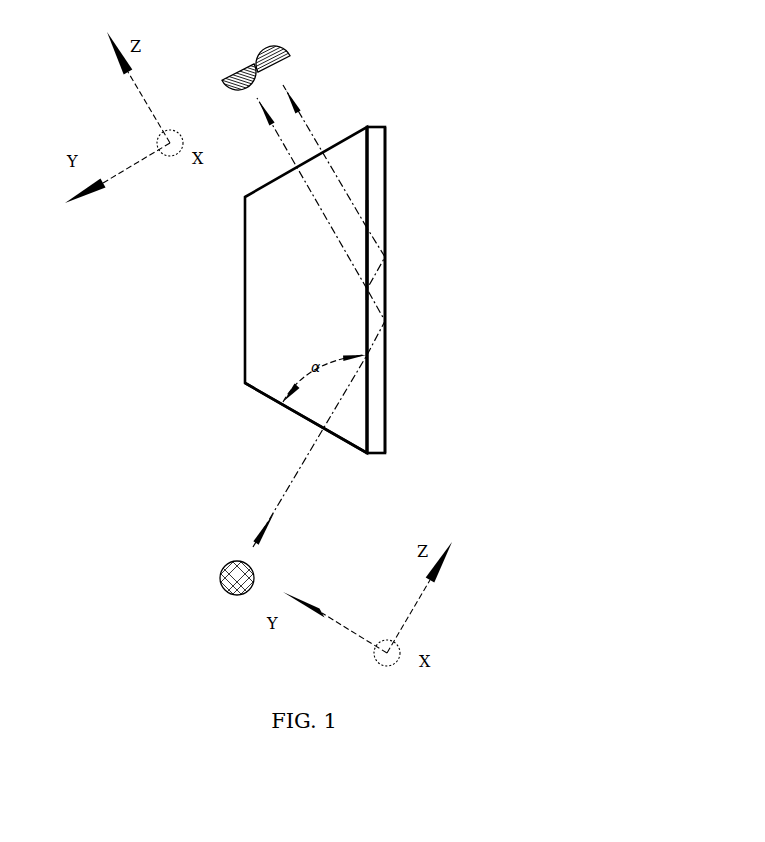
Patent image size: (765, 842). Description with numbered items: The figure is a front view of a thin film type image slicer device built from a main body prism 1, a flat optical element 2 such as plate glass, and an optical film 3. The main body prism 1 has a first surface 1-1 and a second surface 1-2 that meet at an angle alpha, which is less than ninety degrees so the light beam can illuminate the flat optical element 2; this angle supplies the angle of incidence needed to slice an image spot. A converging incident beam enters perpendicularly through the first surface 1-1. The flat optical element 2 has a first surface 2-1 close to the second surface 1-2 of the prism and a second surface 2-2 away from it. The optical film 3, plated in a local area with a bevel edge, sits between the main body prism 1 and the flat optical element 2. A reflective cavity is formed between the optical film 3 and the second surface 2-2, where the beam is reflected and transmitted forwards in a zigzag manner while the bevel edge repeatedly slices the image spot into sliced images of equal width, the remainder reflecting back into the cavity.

The main body prism 1 is at (203, 332).
The first surface of the main body prism 1-1 is at (217, 495).
The second surface of the main body prism 1-2 is at (477, 352).
The flat optical element 2 is at (476, 315).
The first surface of the flat optical element 2-1 is at (432, 258).
The second surface of the flat optical element 2-2 is at (489, 290).
The optical film 3 is at (476, 195).